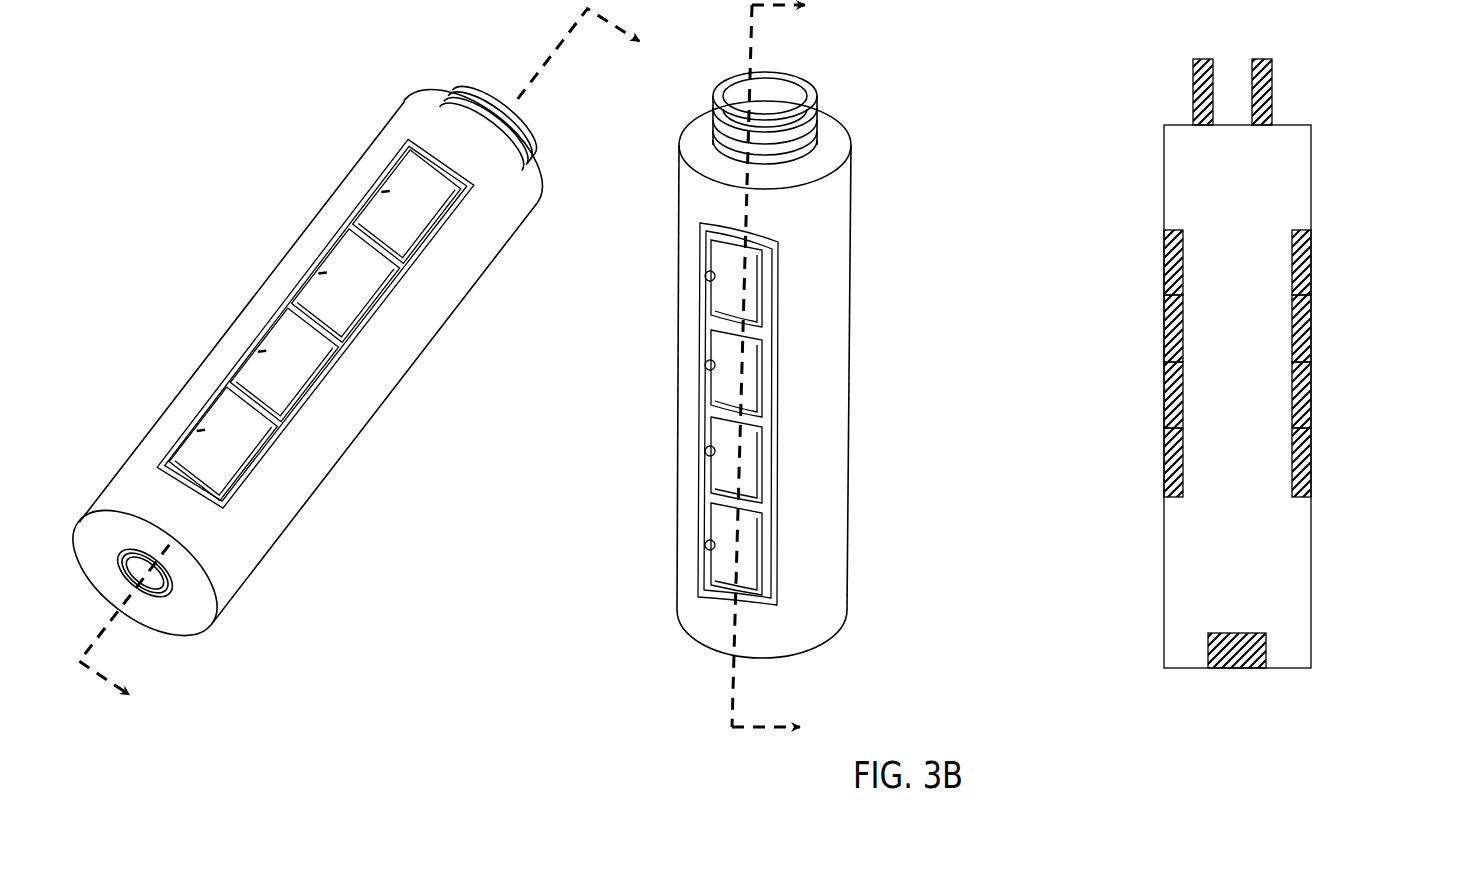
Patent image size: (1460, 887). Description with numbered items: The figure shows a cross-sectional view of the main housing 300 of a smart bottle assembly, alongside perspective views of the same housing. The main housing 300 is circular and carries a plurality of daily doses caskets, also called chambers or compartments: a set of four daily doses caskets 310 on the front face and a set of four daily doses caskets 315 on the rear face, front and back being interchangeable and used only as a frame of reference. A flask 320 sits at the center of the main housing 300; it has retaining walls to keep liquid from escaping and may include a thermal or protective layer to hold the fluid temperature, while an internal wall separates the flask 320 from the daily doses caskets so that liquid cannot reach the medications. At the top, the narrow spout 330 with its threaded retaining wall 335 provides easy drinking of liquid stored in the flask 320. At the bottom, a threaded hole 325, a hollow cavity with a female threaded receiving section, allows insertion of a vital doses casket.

The main housing 300 is at (852, 172).
The daily doses caskets 310 is at (1110, 363).
The daily doses caskets 315 is at (1367, 363).
The flask 320 is at (1256, 554).
The threaded hole 325 is at (138, 608).
The spout 330 is at (735, 96).
The threaded retaining wall 335 is at (1272, 82).